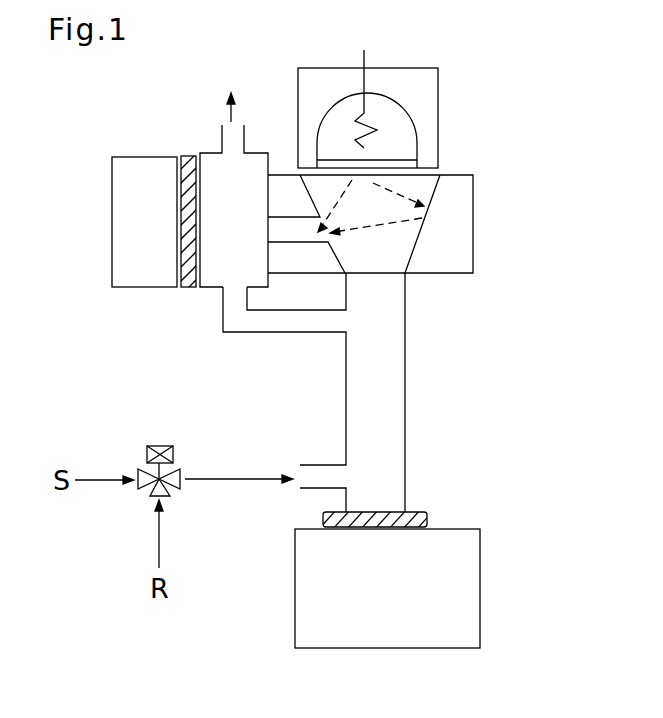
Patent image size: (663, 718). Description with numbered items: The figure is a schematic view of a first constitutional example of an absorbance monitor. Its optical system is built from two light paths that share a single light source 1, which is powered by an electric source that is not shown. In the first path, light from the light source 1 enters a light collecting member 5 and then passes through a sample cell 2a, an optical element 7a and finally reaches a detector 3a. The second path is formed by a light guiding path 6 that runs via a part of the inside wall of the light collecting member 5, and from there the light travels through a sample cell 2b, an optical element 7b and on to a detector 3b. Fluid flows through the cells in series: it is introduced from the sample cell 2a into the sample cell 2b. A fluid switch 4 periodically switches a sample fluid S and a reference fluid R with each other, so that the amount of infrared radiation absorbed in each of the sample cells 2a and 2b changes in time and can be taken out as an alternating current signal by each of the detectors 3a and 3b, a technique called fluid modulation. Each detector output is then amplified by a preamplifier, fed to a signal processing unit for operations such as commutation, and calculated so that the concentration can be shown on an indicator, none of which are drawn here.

The light source 1 is at (418, 130).
The sample cell 2a is at (407, 410).
The sample cell 2b is at (209, 298).
The detector 3a is at (480, 613).
The detector 3b is at (112, 205).
The fluid switch 4 is at (146, 493).
The light collecting member 5 is at (473, 246).
The light guiding path 6 is at (306, 250).
The optical element 7a is at (427, 518).
The optical element 7b is at (187, 156).